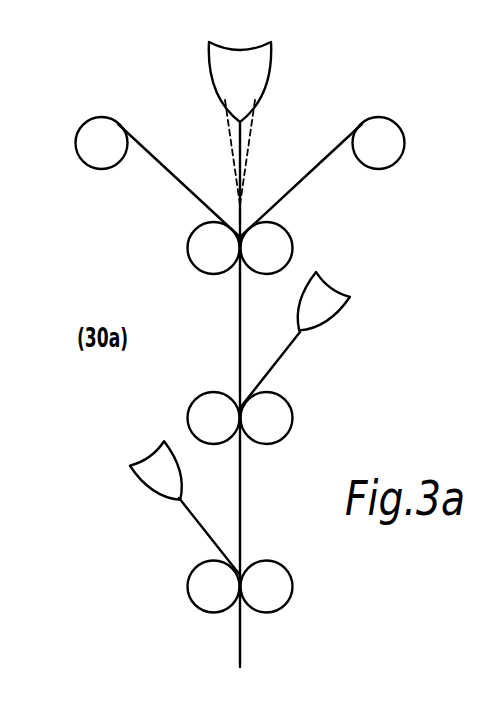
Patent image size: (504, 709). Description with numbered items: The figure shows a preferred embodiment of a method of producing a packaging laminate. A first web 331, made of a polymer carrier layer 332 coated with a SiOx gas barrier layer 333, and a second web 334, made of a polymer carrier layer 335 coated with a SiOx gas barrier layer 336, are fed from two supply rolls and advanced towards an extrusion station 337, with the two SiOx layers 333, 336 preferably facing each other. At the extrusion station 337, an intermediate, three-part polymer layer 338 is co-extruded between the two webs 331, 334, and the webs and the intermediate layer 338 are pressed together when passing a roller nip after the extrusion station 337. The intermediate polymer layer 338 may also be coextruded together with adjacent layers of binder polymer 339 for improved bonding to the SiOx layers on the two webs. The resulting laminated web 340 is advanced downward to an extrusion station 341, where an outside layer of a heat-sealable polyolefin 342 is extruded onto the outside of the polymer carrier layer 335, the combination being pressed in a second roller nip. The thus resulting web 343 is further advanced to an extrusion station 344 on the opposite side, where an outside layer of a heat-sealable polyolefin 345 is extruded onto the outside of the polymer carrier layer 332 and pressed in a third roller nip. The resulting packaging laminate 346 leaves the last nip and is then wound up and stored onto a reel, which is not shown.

The first web 331 is at (92, 133).
The polymer carrier layer 332 is at (181, 183).
The SiOx gas barrier layer 333 is at (149, 141).
The second web 334 is at (389, 133).
The polymer carrier layer 335 is at (312, 172).
The SiOx gas barrier layer 336 is at (333, 141).
The extrusion station 337 is at (236, 59).
The intermediate three-part polymer layer 338 is at (242, 152).
The binder polymer layers 339 is at (235, 192).
The laminated web 340 is at (238, 318).
The extrusion station 341 is at (326, 300).
The heat-sealable polyolefin layer 342 is at (289, 349).
The resulting web 343 is at (242, 507).
The extrusion station 344 is at (154, 466).
The heat-sealable polyolefin layer 345 is at (198, 521).
The packaging laminate 346 is at (242, 647).